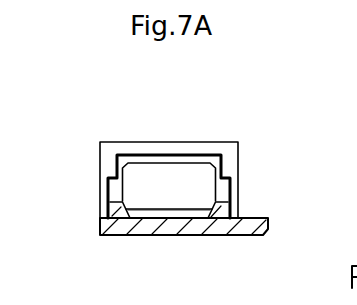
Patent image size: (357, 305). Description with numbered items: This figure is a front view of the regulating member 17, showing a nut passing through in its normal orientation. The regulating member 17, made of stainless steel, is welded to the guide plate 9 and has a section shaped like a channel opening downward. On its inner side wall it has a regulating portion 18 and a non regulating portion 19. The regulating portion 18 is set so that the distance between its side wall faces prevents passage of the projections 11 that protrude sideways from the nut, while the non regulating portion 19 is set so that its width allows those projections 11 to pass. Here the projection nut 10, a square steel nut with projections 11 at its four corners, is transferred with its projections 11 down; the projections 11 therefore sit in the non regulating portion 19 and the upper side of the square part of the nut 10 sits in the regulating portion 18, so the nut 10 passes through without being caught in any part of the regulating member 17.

The guide plate 9 is at (250, 237).
The projection nut 10 is at (169, 203).
The projections 11 is at (117, 202).
The regulating member 17 is at (238, 150).
The regulating portion 18 is at (105, 157).
The non regulating portion 19 is at (220, 193).